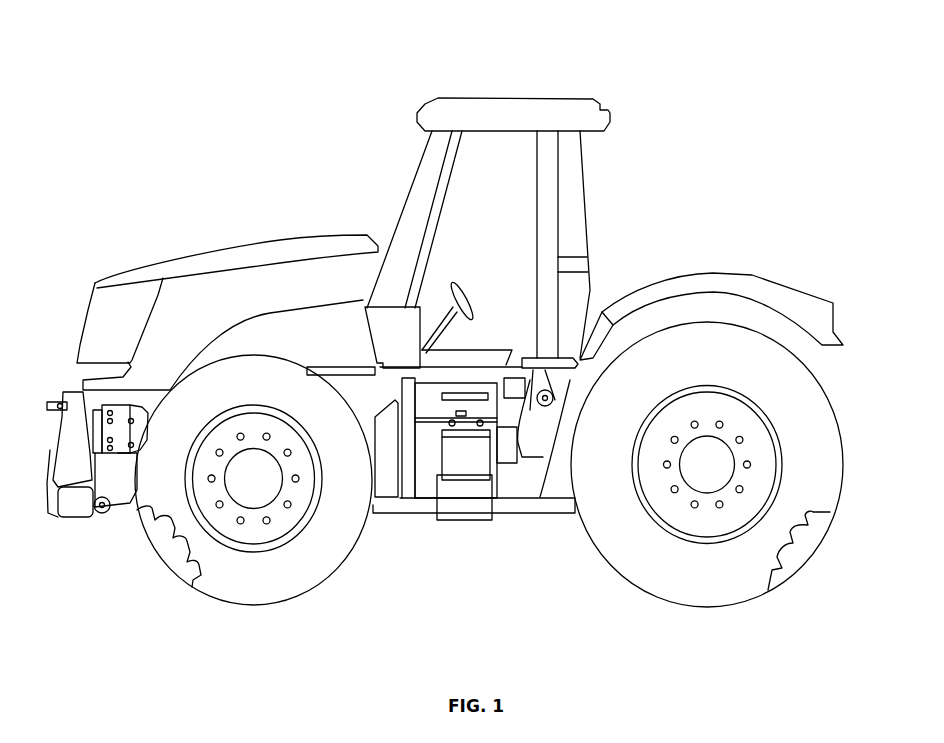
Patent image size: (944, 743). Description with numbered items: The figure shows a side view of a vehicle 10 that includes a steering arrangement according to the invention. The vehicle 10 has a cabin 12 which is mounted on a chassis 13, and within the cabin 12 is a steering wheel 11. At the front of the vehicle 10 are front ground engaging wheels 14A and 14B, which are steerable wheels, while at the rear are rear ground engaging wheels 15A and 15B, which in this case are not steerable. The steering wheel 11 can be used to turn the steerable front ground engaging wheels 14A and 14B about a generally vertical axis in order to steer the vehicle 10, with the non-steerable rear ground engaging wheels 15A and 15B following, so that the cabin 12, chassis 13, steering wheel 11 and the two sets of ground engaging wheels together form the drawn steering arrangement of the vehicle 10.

The vehicle 10 is at (643, 188).
The steering wheel 11 is at (457, 282).
The cabin 12 is at (528, 115).
The chassis 13 is at (525, 509).
The front ground engaging wheel 14A is at (222, 585).
The front ground engaging wheel 14B is at (162, 545).
The rear ground engaging wheel 15A is at (712, 597).
The rear ground engaging wheel 15B is at (803, 555).